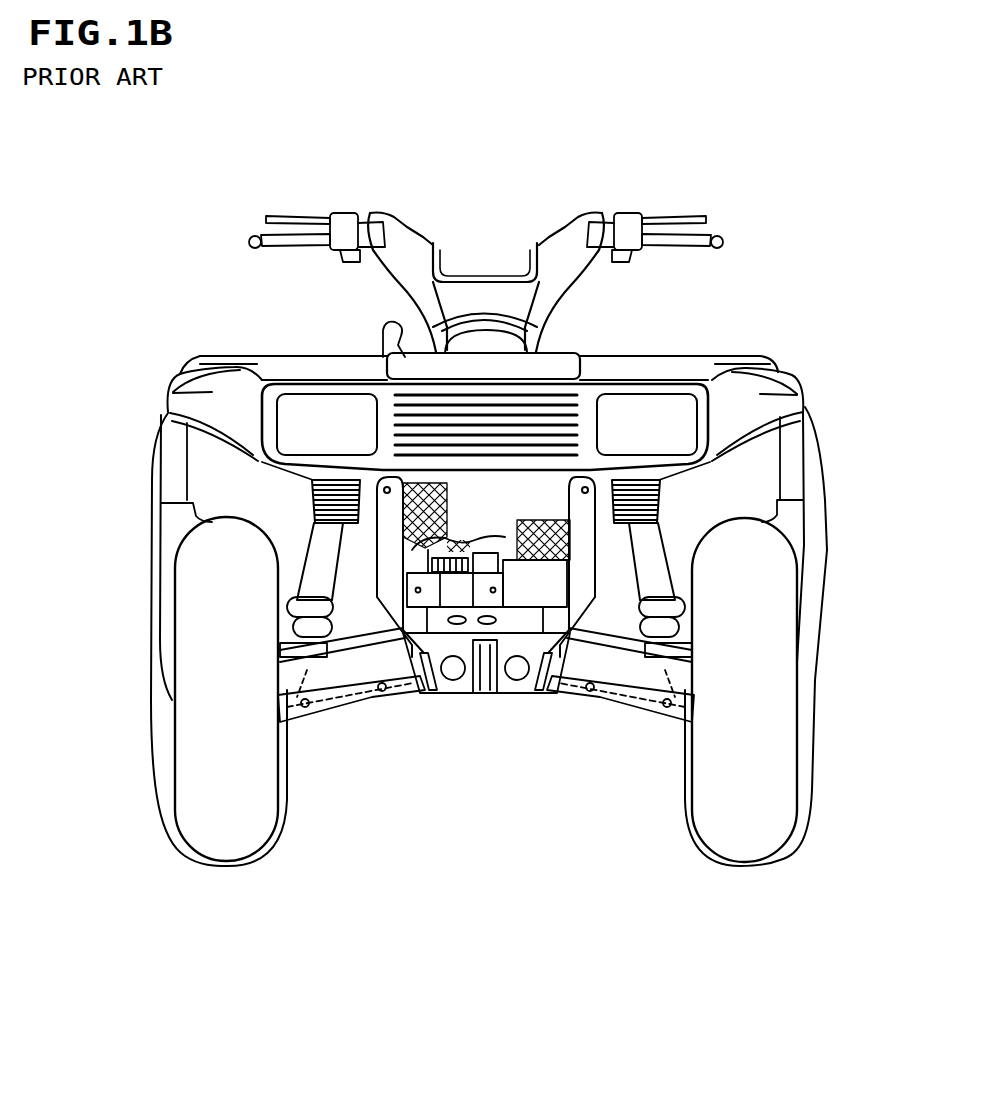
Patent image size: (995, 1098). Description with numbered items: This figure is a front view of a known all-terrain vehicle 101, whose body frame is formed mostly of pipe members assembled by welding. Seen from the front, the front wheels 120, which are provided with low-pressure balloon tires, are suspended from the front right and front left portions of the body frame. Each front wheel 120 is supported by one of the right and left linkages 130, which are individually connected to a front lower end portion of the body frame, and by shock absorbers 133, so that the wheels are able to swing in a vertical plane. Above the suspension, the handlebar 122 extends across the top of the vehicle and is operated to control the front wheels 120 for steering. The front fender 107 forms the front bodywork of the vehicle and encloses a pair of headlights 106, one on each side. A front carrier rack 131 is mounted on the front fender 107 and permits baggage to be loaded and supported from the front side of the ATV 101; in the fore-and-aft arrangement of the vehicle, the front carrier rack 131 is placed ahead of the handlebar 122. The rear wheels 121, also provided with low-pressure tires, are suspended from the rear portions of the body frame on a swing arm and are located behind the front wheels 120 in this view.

The all-terrain vehicle 101 is at (150, 219).
The headlights 106 is at (300, 413).
The front fender 107 is at (172, 392).
The front wheels 120 is at (218, 843).
The rear wheels 121 is at (155, 800).
The handlebar 122 is at (470, 290).
The linkages 130 is at (333, 678).
The front carrier rack 131 is at (650, 360).
The shock absorbers 133 is at (322, 548).